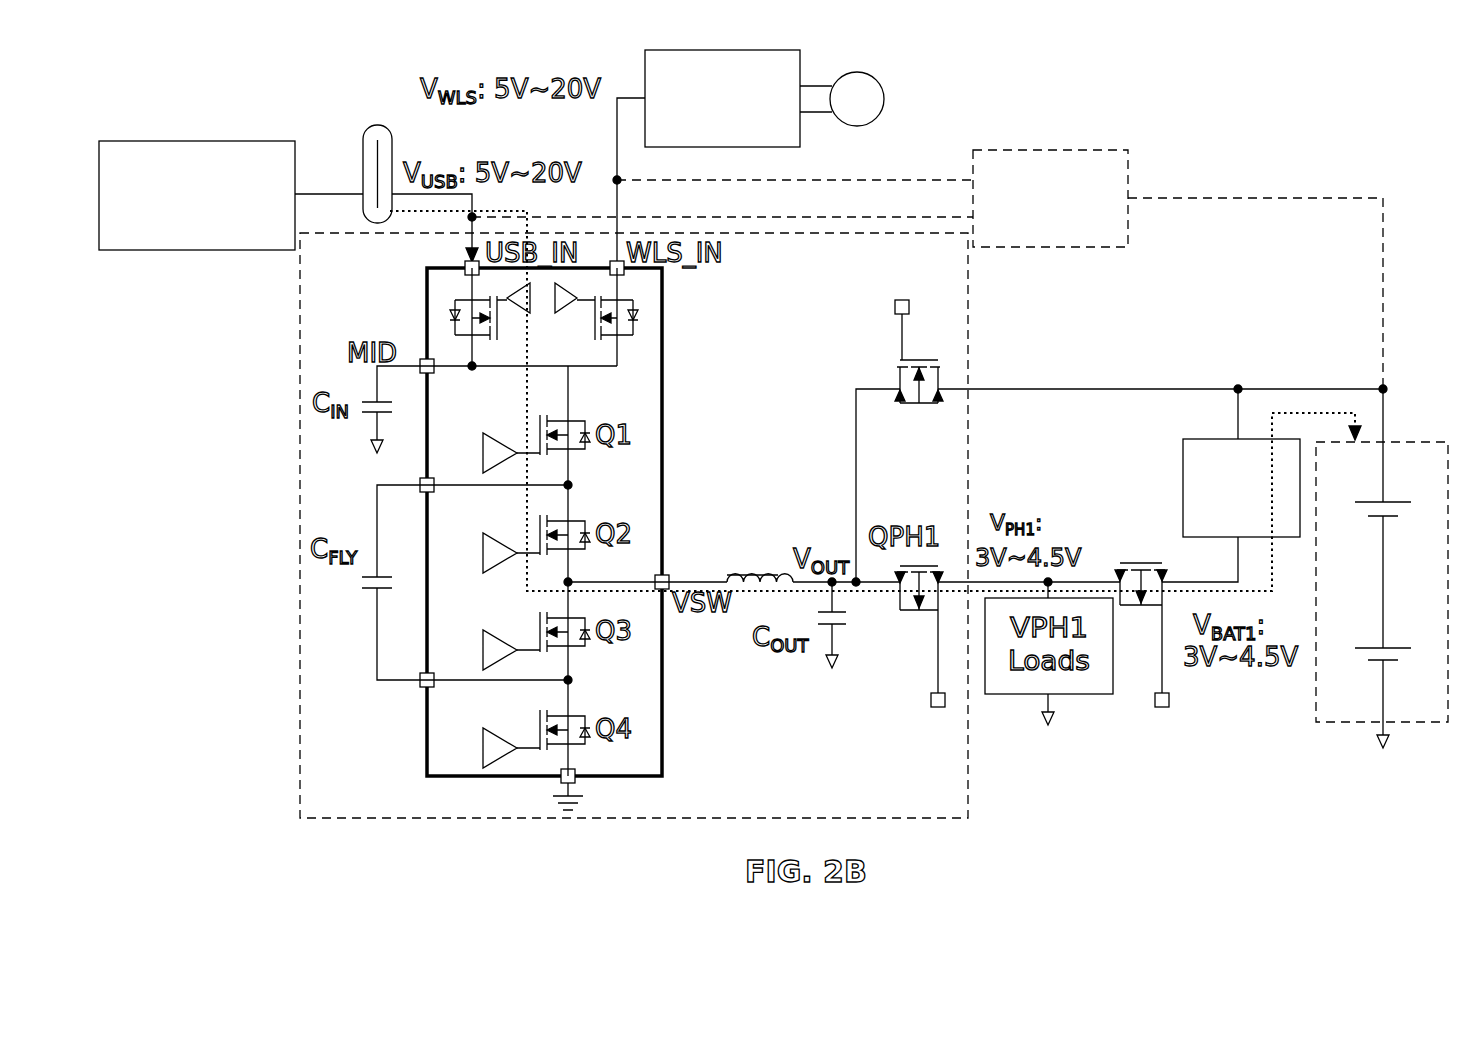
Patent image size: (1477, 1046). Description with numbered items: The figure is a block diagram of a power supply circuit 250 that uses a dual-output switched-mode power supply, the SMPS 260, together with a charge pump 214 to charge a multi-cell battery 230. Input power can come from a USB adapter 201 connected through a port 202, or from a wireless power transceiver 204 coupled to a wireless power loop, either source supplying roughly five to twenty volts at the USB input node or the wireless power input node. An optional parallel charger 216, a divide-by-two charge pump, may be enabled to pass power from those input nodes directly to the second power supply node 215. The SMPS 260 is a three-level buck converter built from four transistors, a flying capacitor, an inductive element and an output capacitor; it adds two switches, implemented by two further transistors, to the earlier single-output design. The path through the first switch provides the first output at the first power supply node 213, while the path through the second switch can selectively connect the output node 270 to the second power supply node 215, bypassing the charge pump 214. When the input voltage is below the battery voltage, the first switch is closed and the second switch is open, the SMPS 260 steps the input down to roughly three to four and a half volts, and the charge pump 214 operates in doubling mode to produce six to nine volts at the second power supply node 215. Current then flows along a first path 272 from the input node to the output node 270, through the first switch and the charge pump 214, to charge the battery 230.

The power supply circuit 250 is at (256, 54).
The USB adapter 201 is at (170, 140).
The port 202 is at (370, 126).
The wireless power transceiver 204 is at (714, 50).
The parallel charger 216 is at (1056, 154).
The dual-output SMPS 260 is at (970, 794).
The output node 270 is at (857, 388).
The first path 272 is at (685, 584).
The first power supply node 213 is at (1238, 556).
The charge pump 214 is at (1225, 438).
The second power supply node 215 is at (1310, 390).
The battery 230 is at (1400, 444).